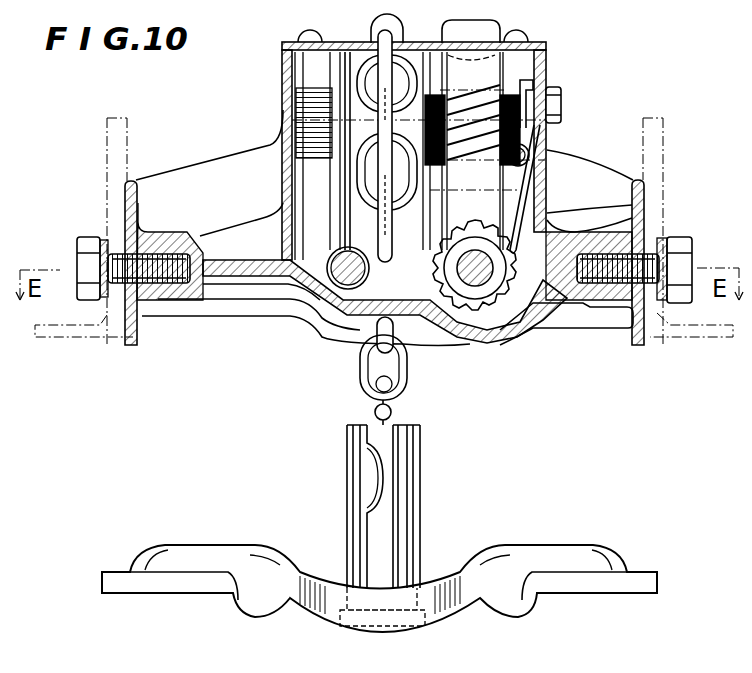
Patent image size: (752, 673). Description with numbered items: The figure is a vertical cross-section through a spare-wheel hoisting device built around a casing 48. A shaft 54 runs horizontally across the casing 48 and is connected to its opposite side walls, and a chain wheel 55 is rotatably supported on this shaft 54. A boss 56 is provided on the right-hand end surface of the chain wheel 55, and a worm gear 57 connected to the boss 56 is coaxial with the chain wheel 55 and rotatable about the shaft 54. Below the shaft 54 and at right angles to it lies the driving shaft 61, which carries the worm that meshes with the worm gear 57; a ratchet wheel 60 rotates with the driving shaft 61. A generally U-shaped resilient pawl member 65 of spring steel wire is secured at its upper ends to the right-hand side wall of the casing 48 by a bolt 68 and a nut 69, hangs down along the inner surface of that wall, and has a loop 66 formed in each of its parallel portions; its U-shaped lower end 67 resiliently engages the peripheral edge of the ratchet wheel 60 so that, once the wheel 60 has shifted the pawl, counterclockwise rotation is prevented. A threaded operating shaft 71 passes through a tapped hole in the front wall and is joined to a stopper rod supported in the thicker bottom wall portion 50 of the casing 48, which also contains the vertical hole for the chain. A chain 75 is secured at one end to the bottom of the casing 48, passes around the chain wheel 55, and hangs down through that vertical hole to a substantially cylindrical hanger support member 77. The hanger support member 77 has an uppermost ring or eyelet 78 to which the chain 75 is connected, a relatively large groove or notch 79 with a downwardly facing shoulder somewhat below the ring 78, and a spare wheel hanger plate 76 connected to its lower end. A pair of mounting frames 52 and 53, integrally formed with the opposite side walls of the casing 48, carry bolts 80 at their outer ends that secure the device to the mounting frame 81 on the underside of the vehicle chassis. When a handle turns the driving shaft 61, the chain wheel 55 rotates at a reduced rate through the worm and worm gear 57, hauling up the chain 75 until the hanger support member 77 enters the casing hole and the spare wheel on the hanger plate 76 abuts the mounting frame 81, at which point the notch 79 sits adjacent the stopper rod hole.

The casing 48 is at (281, 118).
The thicker bottom wall portion 50 is at (318, 292).
The mounting frame 52 is at (126, 190).
The mounting frame 53 is at (643, 185).
The shaft 54 is at (296, 44).
The chain wheel 55 is at (348, 52).
The boss 56 is at (458, 45).
The worm gear 57 is at (500, 44).
The ratchet wheel 60 is at (508, 305).
The driving shaft 61 is at (476, 285).
The resilient pawl member 65 is at (633, 207).
The loop 66 is at (528, 152).
The U-shaped lower end 67 is at (600, 233).
The bolt 68 is at (565, 95).
The nut 69 is at (545, 85).
The threaded operating shaft 71 is at (338, 283).
The chain 75 is at (396, 55).
The spare wheel hanger plate 76 is at (598, 552).
The hanger support member 77 is at (412, 465).
The ring or eyelet 78 is at (393, 408).
The groove or notch 79 is at (367, 465).
The bolts 80 is at (95, 240).
The mounting frame 81 is at (95, 335).